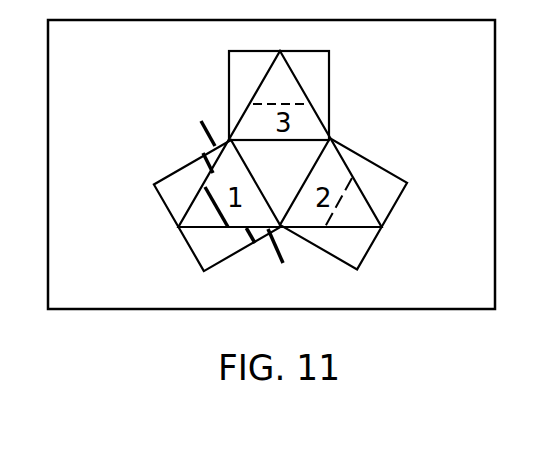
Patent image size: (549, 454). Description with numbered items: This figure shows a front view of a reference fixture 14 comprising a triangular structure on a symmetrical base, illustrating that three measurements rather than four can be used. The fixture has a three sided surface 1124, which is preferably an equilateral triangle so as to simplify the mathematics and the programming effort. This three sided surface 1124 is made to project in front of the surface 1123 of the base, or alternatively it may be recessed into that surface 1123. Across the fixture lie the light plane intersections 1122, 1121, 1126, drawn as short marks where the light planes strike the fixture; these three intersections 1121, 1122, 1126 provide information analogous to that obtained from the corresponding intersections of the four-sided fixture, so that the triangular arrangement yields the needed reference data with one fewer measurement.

The drawing sheet frame / plate 14 is at (437, 80).
The light plane intersection 1121 is at (207, 161).
The light plane intersection 1122 is at (217, 210).
The surface 1123 is at (355, 249).
The three sided surface 1124 is at (310, 173).
The light plane intersection 1126 is at (204, 135).